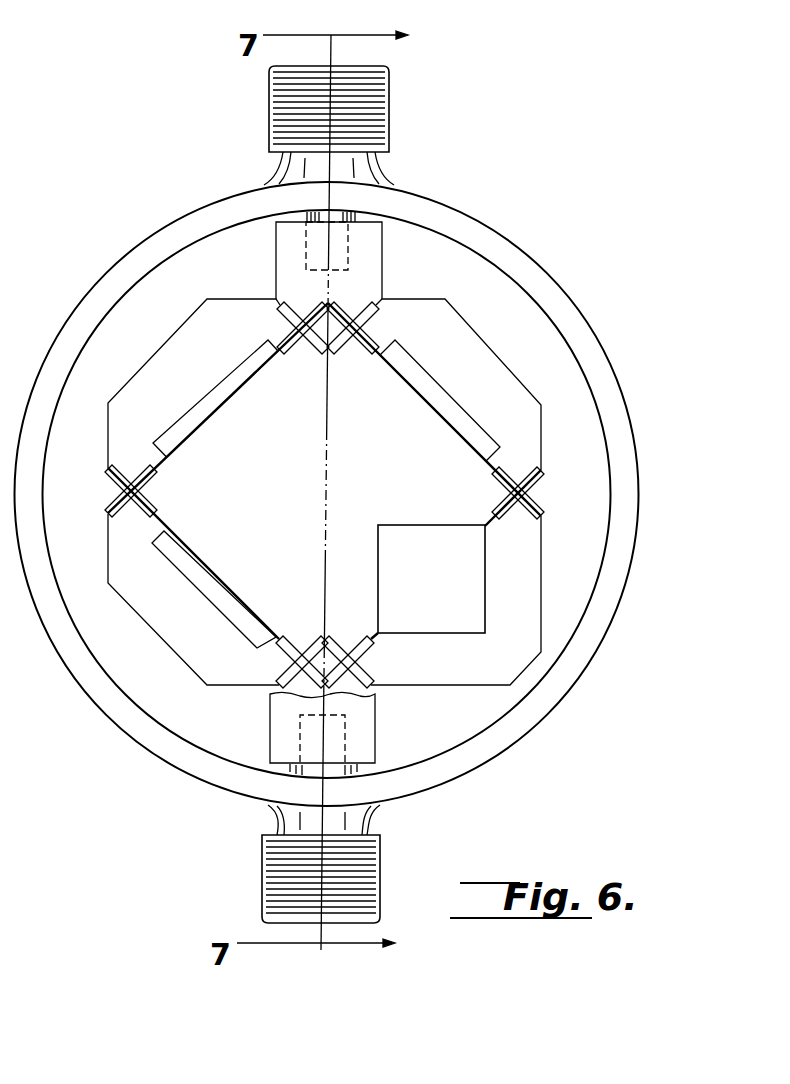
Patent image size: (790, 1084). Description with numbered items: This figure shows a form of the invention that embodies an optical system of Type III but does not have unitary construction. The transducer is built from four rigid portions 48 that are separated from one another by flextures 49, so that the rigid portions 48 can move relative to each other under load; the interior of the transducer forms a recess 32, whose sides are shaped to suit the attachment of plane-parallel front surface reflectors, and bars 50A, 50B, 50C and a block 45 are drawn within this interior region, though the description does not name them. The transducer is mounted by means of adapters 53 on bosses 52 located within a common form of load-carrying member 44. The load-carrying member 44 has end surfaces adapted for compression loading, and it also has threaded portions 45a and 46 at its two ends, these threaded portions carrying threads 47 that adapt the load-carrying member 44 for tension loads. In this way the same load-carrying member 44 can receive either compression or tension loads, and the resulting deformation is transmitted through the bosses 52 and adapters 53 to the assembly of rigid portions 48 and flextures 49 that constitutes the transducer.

The recess 32 is at (278, 485).
The load-carrying member 44 is at (600, 341).
The block 45 is at (387, 548).
The threaded portion 45a is at (389, 132).
The threaded portion 46 is at (263, 859).
The threads 47 is at (378, 88).
The rigid portions 48 is at (188, 335).
The flextures 49 is at (105, 494).
The gauge bar 50A is at (422, 388).
The gauge bar 50B is at (212, 403).
The gauge bar 50C is at (207, 572).
The bosses 52 is at (337, 236).
The adapters 53 is at (373, 251).